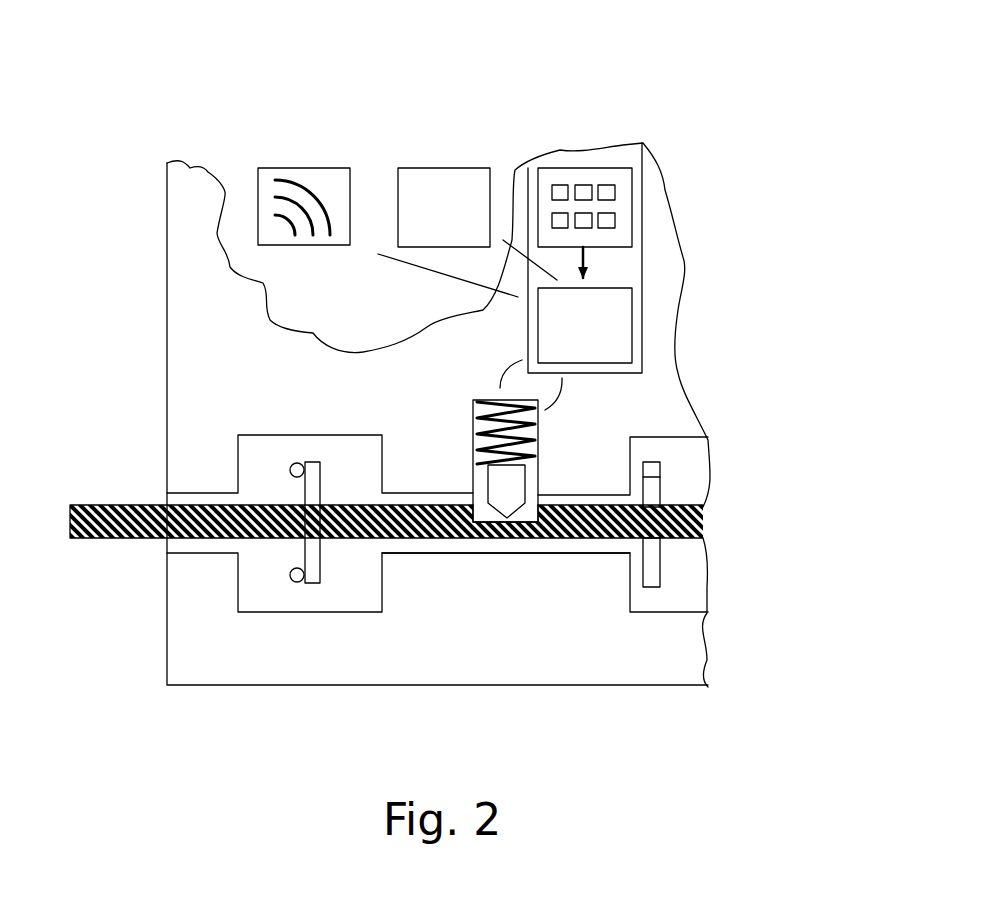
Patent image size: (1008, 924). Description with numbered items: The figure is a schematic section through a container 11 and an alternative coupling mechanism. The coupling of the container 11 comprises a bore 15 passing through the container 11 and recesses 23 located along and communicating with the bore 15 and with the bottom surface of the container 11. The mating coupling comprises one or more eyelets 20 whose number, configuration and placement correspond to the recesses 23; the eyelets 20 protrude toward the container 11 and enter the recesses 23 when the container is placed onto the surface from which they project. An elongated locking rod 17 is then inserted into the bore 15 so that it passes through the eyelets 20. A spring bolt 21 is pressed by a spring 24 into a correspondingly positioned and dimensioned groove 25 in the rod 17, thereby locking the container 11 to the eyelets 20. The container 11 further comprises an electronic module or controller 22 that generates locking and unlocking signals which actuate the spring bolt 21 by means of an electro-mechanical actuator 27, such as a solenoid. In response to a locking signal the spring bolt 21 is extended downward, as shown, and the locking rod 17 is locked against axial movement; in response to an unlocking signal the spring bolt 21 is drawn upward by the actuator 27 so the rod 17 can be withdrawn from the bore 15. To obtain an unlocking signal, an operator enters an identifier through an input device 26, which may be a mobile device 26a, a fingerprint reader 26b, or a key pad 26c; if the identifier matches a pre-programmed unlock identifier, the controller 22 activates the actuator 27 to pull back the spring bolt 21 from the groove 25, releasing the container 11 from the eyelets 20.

The container 11 is at (630, 66).
The bore 15 is at (593, 568).
The locking rod 17 is at (102, 556).
The eyelets 20 is at (286, 567).
The spring bolt 21 is at (548, 444).
The controller 22 is at (612, 321).
The recesses 23 is at (262, 465).
The spring 24 is at (550, 460).
The groove 25 is at (553, 501).
The input device 26 is at (614, 126).
The mobile device 26a is at (322, 177).
The fingerprint reader 26b is at (444, 182).
The key pad 26c is at (560, 177).
The electro-mechanical actuator 27 is at (458, 398).